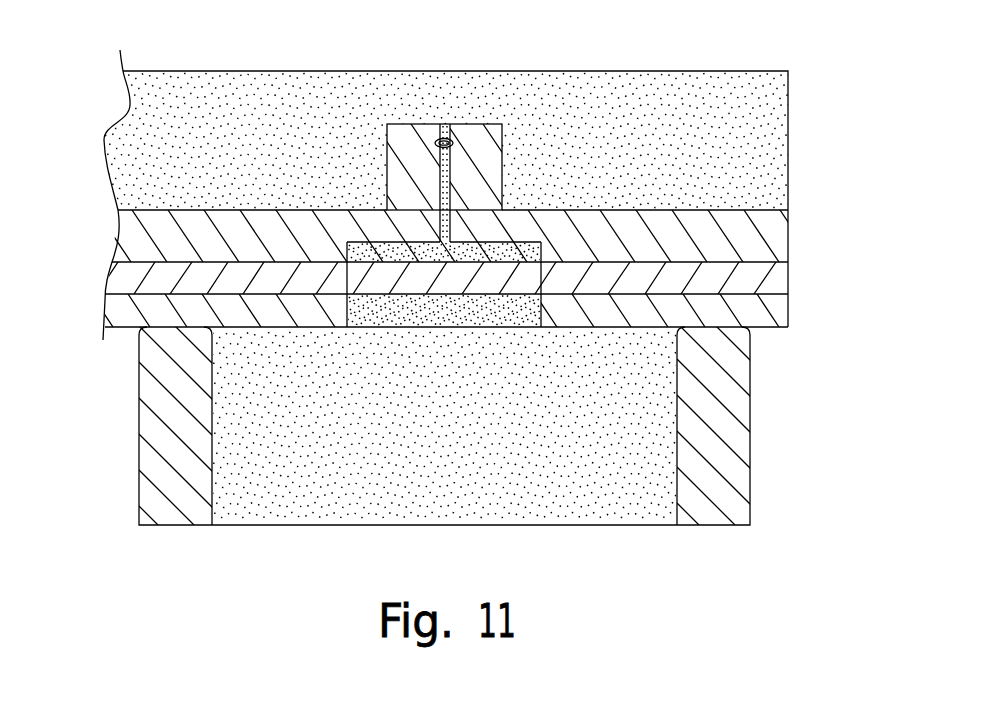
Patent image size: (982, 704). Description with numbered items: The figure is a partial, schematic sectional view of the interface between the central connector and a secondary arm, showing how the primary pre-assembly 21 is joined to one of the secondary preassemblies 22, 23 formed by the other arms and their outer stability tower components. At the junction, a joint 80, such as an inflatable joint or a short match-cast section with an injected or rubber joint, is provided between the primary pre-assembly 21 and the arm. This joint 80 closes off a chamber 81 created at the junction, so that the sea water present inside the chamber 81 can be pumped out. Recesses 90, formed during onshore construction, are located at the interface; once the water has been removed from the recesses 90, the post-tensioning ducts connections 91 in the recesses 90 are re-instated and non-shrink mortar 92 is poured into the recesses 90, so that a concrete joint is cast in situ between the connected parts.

The primary pre-assembly 21 is at (143, 232).
The secondary preassembly 22 is at (662, 236).
The secondary preassembly 23 is at (750, 240).
The joint 80 is at (463, 163).
The chamber 81 is at (247, 365).
The recess 90 is at (541, 306).
The post-tensioning ducts connection 91 is at (366, 282).
The non-shrink mortar 92 is at (366, 313).